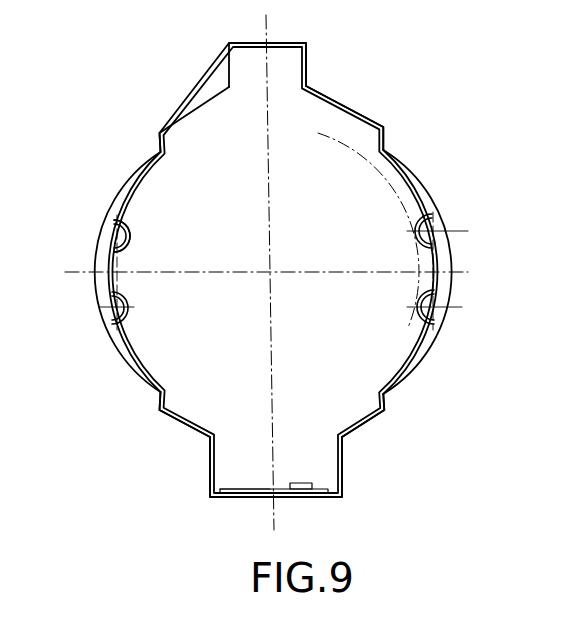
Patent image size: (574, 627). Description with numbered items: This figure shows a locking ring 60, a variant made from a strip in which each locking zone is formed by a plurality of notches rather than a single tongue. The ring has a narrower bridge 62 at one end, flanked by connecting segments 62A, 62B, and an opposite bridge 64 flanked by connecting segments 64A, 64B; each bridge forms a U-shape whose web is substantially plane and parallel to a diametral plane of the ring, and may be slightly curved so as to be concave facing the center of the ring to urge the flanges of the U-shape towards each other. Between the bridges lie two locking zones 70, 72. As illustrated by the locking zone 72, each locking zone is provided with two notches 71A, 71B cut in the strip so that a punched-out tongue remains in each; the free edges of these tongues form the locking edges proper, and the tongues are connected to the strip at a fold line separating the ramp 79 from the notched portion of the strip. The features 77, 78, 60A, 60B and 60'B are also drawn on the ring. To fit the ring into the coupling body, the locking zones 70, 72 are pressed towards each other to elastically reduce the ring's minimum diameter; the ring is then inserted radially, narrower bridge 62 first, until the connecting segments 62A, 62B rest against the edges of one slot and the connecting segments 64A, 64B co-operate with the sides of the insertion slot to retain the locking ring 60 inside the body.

The locking ring 60 is at (273, 257).
The bridge 62 is at (254, 43).
The connecting segment 62A is at (360, 110).
The connecting segment 62B is at (205, 106).
The bridge 64 is at (312, 499).
The connecting segment 64A is at (367, 425).
The connecting segment 64B is at (187, 430).
The locking zone 70 is at (405, 245).
The locking zone 72 is at (137, 243).
The notch 71A is at (120, 233).
The notch 71B is at (117, 303).
The right lower boss 77 is at (445, 290).
The right flange arc 78 is at (418, 185).
The ramp 79 is at (113, 210).
The bottom plate left portion 60A is at (237, 489).
The bottom plate 60B is at (247, 500).
The bottom plate tab 60'B is at (305, 456).